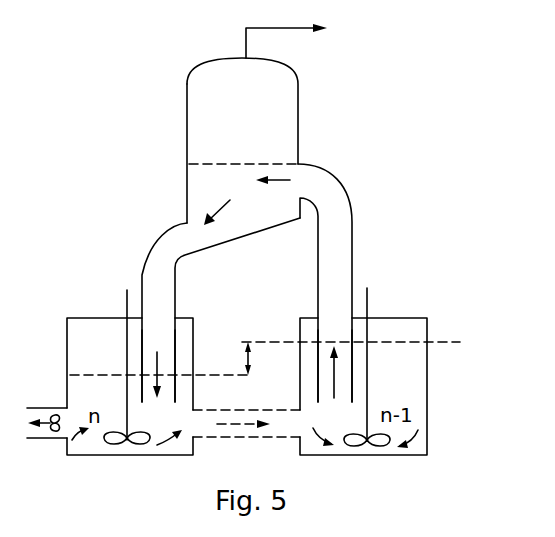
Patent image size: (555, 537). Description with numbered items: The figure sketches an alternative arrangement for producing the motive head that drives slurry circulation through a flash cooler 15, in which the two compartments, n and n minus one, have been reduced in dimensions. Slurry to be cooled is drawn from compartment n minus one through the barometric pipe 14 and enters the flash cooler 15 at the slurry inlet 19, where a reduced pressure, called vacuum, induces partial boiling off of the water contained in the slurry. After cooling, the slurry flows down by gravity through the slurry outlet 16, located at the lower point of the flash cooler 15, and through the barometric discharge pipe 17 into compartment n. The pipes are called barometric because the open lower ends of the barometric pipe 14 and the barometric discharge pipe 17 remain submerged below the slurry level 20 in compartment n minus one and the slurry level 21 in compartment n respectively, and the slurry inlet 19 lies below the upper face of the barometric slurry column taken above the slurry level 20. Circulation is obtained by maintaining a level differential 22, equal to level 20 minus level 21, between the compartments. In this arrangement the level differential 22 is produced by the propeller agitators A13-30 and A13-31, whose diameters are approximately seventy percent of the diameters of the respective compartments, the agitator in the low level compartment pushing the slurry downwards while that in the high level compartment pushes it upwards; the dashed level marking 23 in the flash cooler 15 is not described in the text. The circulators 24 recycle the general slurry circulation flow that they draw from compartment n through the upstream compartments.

The barometric pipe 14 is at (330, 313).
The flash cooler 15 is at (253, 129).
The slurry outlet 16 is at (202, 237).
The barometric discharge pipe 17 is at (157, 311).
The slurry inlet 19 is at (298, 188).
The slurry level 20 is at (351, 331).
The slurry level 21 is at (161, 361).
The level differential 22 is at (243, 359).
The liquid level in separator 23 is at (213, 163).
The circulators 24 is at (47, 435).
The propeller agitator A13-30 is at (107, 355).
The propeller agitator A13-31 is at (388, 357).